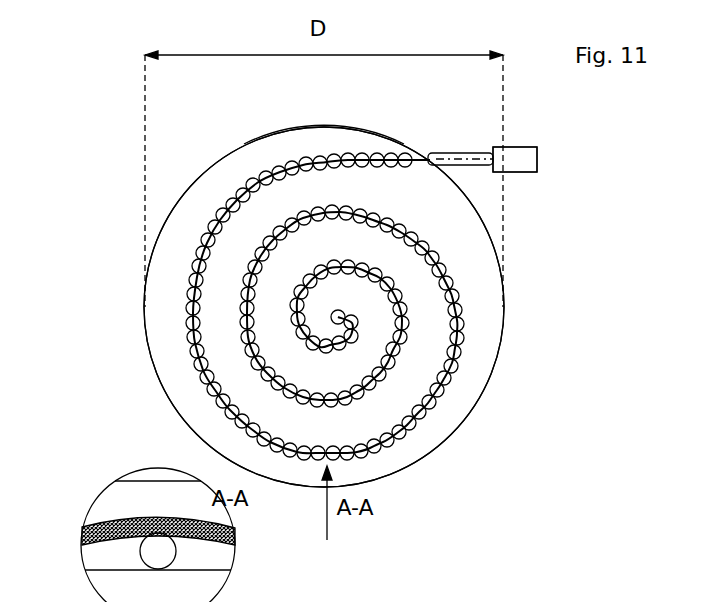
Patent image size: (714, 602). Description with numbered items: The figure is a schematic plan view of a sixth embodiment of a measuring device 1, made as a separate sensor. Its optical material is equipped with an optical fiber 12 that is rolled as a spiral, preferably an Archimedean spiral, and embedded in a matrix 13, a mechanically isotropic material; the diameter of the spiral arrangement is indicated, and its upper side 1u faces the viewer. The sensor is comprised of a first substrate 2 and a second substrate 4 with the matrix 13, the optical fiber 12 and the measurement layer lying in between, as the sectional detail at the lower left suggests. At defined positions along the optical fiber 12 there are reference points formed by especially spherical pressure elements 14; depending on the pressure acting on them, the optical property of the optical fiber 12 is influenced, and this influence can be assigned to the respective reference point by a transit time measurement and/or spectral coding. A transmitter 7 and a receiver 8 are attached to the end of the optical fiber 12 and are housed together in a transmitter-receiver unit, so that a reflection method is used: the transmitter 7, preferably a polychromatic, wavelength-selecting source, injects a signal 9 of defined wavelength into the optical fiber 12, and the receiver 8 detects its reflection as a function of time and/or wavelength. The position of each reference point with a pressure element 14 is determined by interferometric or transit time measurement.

The measuring device 1 is at (403, 125).
The upper side of device 1u is at (248, 138).
The first substrate 2 is at (115, 577).
The second substrate 4 is at (165, 473).
The transmitter 7 is at (517, 153).
The receiver 8 is at (513, 165).
The signal 9 is at (450, 158).
The optical fiber 12 is at (312, 158).
The matrix 13 is at (163, 333).
The pressure elements 14 is at (202, 250).